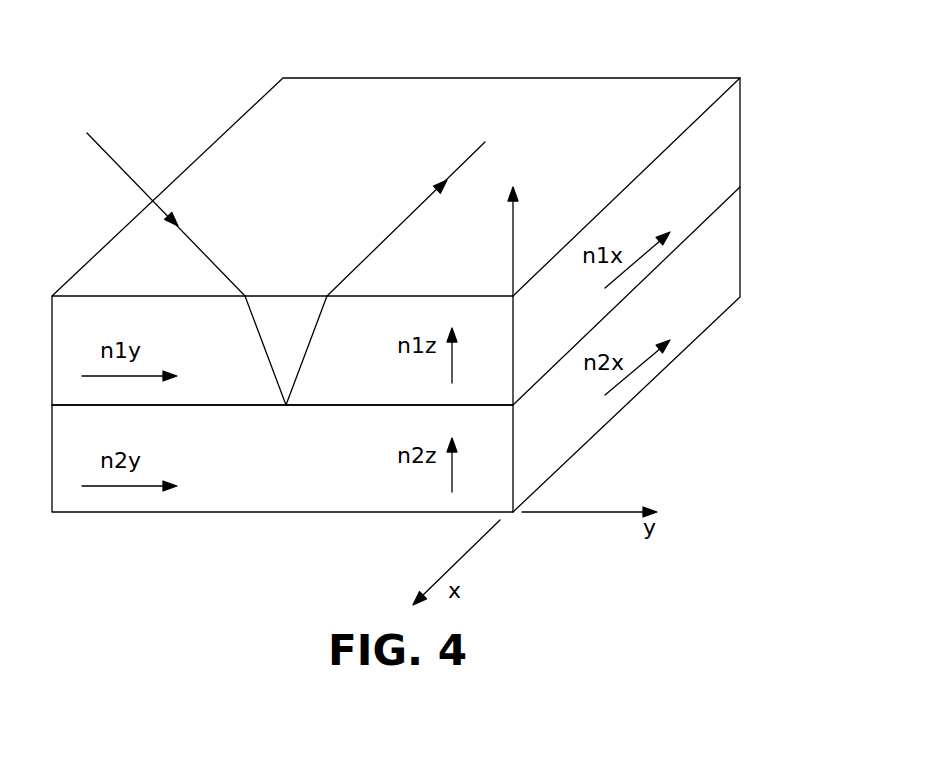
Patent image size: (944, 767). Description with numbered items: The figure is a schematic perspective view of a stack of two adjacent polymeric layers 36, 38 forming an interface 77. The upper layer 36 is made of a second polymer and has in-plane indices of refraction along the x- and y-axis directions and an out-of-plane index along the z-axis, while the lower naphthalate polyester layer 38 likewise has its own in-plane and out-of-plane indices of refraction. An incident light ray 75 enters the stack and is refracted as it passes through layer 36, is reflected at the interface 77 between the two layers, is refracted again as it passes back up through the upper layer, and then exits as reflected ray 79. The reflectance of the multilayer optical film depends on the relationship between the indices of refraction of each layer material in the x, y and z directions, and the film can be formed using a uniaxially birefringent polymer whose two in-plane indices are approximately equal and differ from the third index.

The layer 36 is at (740, 127).
The naphthalate polyester layer 38 is at (740, 242).
The incident light ray 75 is at (107, 152).
The interface 77 is at (307, 405).
The reflected ray 79 is at (458, 167).